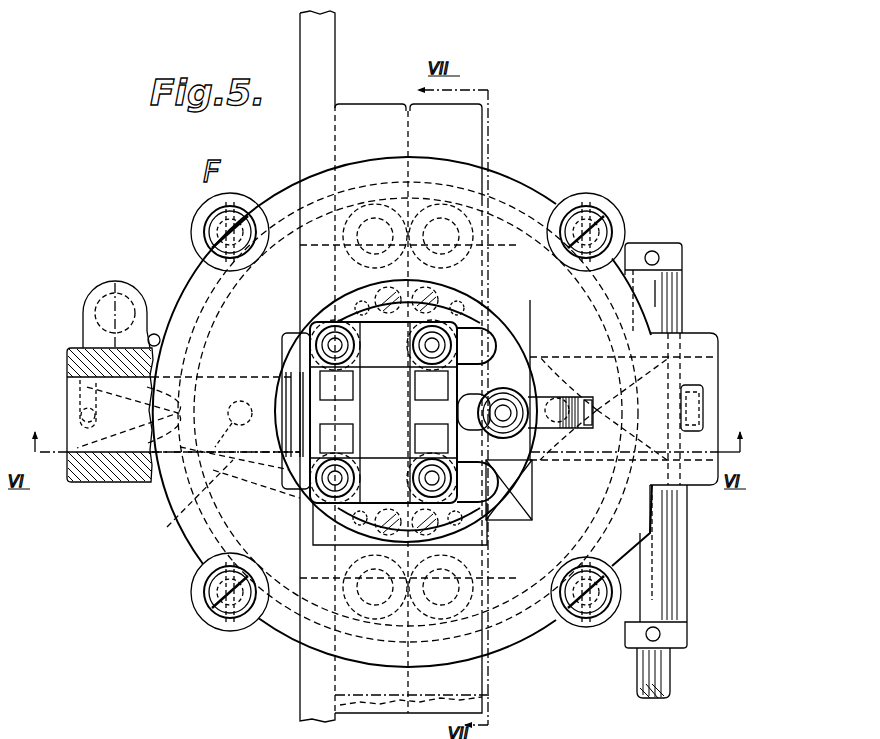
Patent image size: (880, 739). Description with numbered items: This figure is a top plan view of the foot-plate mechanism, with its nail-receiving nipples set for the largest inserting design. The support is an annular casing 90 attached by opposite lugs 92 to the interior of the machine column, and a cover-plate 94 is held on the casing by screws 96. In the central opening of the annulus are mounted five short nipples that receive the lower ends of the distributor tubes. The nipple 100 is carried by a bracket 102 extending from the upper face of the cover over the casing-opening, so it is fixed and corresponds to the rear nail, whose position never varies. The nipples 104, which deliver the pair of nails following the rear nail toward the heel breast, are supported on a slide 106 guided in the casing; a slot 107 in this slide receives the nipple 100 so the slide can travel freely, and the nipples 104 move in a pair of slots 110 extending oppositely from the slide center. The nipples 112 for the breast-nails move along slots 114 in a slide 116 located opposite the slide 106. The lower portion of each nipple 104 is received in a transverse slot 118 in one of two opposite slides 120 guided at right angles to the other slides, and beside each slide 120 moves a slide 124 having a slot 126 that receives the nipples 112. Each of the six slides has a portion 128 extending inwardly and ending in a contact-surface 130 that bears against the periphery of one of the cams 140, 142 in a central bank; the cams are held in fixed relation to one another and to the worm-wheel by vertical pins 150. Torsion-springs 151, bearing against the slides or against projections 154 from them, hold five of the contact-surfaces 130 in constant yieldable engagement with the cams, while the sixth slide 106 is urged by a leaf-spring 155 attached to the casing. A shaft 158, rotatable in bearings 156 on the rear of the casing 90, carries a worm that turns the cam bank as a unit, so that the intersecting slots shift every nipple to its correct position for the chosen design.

The annular casing 90 is at (197, 273).
The lugs 92 is at (335, 42).
The cover-plate 94 is at (234, 470).
The screws 96 is at (220, 217).
The nipple 100 is at (505, 393).
The bracket 102 is at (546, 396).
The nipples 104 is at (432, 330).
The slide 106 is at (513, 470).
The slot 107 is at (462, 400).
The slots 110 is at (426, 405).
The nipples 112 is at (328, 327).
The slots 114 is at (352, 380).
The slide 116 is at (295, 375).
The slot 118 is at (478, 342).
The slides 120 is at (468, 147).
The slide 124 is at (343, 138).
The slot 126 is at (378, 337).
The portion 128 is at (133, 445).
The contact-surface 130 is at (186, 410).
The cams 140 is at (667, 300).
The cams 142 is at (168, 522).
The vertical pins 150 is at (240, 425).
The torsion-springs 151 is at (290, 208).
The projections 154 is at (442, 251).
The leaf-spring 155 is at (703, 430).
The bearings 156 is at (685, 580).
The shaft 158 is at (670, 681).